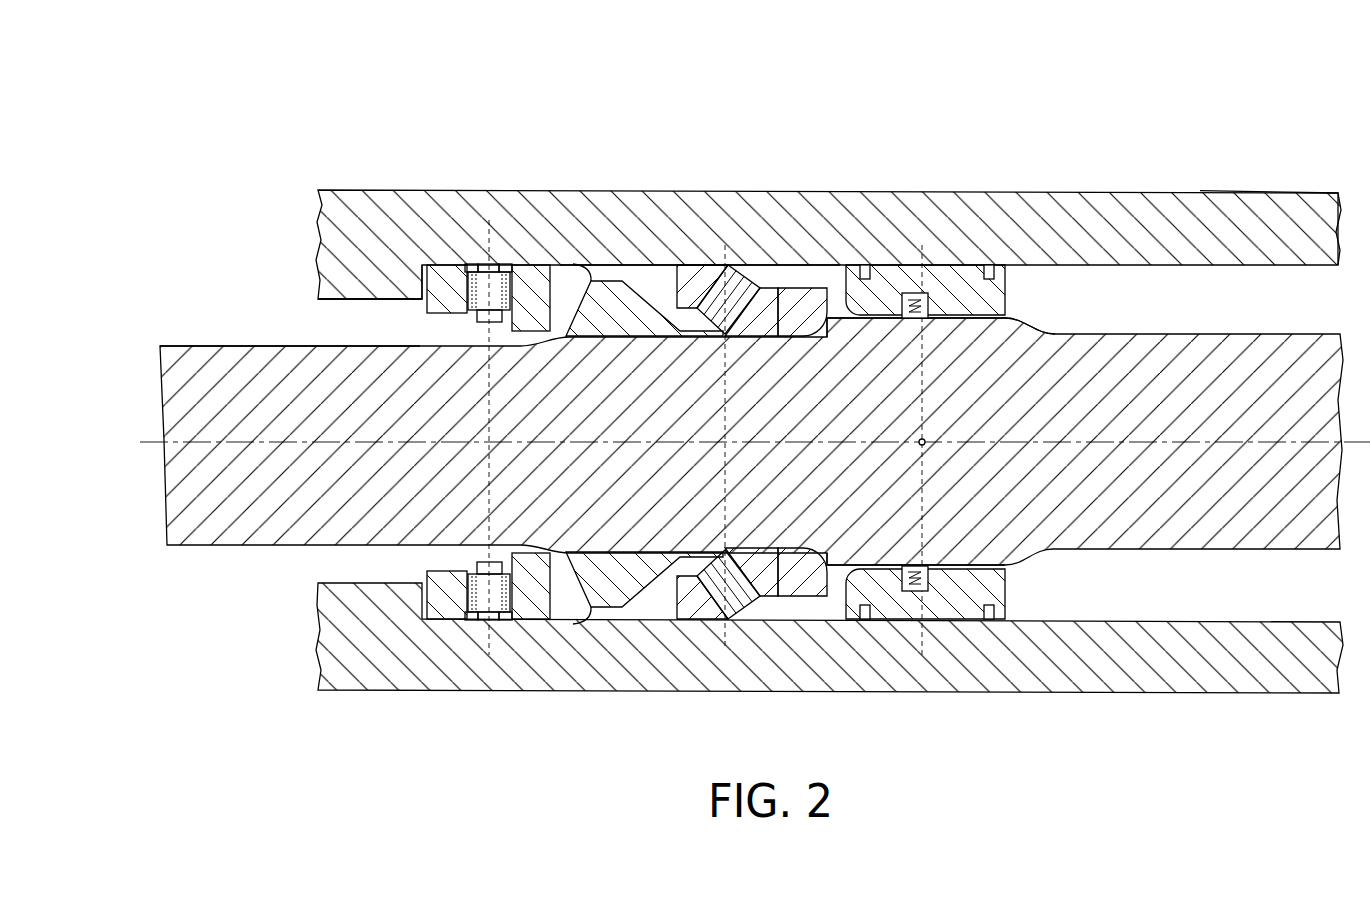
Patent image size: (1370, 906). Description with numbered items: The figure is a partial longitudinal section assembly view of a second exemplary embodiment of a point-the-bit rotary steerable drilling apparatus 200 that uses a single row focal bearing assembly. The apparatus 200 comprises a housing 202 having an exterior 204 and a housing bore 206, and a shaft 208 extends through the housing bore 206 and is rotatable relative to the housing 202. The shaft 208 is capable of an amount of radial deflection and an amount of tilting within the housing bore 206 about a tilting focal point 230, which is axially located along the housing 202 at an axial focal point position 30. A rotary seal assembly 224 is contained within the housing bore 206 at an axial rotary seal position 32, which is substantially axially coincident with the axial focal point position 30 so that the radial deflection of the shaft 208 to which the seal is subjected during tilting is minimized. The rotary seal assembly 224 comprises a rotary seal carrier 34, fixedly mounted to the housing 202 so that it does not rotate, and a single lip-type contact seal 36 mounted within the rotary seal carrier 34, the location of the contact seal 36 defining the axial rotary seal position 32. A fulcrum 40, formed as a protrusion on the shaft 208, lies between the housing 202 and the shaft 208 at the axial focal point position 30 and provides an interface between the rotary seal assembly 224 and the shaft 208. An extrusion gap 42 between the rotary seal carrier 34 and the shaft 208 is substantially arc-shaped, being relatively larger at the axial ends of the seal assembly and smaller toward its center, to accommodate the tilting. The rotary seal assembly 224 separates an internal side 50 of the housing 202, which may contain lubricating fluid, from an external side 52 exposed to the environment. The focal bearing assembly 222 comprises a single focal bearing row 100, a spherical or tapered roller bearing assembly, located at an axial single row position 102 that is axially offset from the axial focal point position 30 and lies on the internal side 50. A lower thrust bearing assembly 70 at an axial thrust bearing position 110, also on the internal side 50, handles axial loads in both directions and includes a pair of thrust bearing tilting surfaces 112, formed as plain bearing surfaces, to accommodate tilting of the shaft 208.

The point-the-bit rotary steerable drilling apparatus 200 is at (694, 389).
The housing 202 is at (387, 202).
The exterior 204 is at (470, 175).
The housing bore 206 is at (1265, 603).
The shaft 208 is at (212, 370).
The focal bearing assembly 222 is at (710, 158).
The rotary seal assembly 224 is at (943, 280).
The tilting focal point 230 is at (924, 444).
The axial focal point position 30 is at (922, 430).
The axial rotary seal position 32 is at (920, 370).
The rotary seal carrier 34 is at (877, 292).
The single lip-type contact seal 36 is at (905, 290).
The fulcrum 40 is at (1013, 318).
The extrusion gap 42 is at (847, 314).
The internal side 50 is at (345, 320).
The external side 52 is at (1268, 298).
The lower thrust bearing assembly 70 is at (513, 287).
The single focal bearing row 100 is at (754, 442).
The axial single row position 102 is at (640, 598).
The axial thrust bearing position 110 is at (488, 632).
The thrust bearing tilting surfaces 112 is at (545, 300).